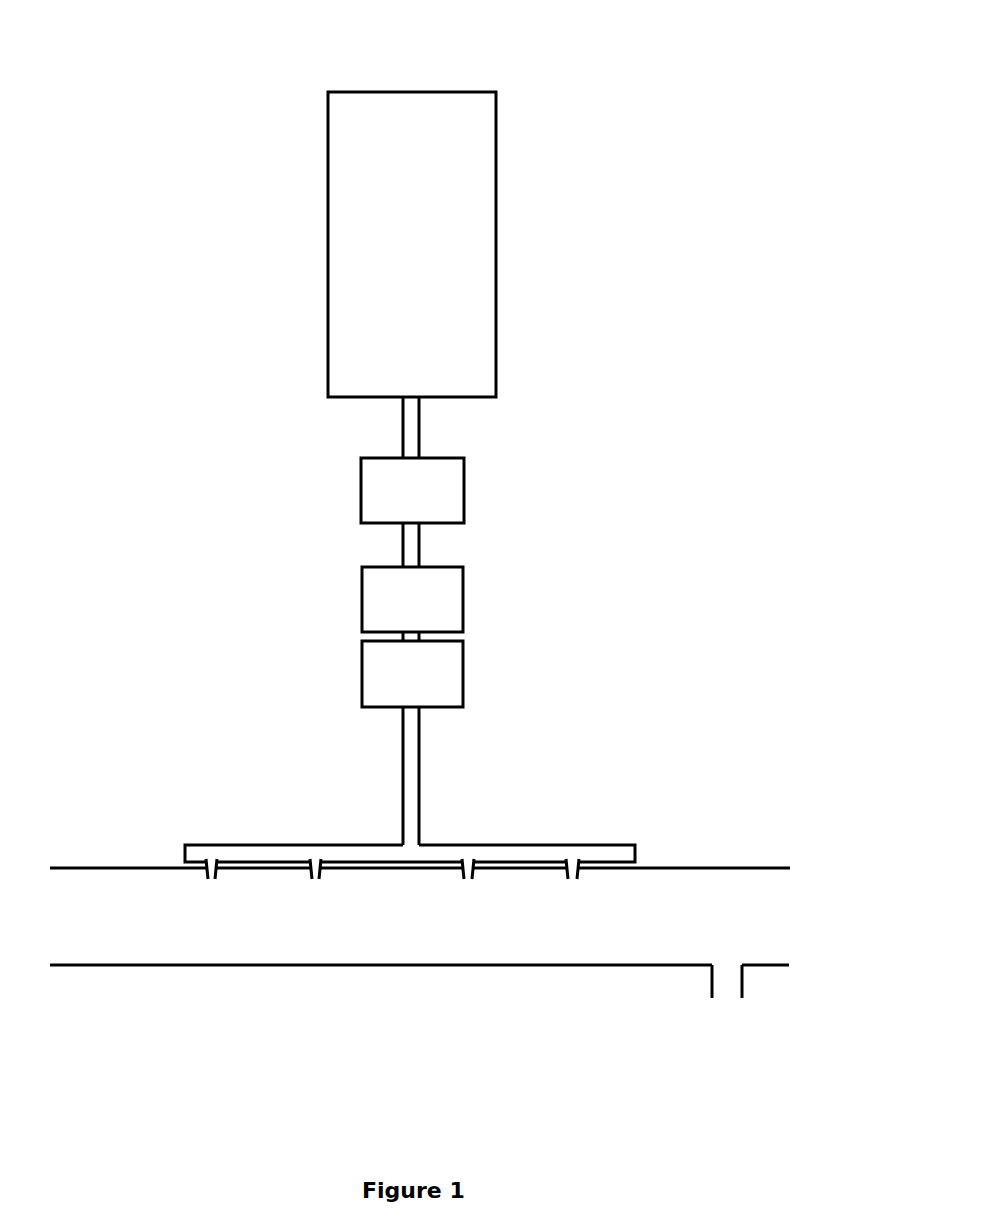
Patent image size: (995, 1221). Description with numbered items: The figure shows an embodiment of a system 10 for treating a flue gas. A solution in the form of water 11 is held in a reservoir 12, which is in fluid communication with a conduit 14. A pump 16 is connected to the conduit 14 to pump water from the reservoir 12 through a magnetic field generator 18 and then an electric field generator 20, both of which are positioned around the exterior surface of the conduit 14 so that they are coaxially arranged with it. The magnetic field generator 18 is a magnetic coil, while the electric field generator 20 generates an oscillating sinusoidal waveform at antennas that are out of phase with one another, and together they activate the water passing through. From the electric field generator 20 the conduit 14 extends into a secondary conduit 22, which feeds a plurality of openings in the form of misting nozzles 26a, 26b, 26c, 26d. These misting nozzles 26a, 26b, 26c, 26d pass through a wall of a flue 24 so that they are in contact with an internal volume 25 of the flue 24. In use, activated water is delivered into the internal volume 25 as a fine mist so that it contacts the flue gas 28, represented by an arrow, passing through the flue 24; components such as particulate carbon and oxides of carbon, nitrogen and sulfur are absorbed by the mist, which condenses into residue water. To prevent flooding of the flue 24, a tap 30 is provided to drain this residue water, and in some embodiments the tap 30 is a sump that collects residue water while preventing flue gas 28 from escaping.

The system 10 is at (247, 84).
The water 11 is at (395, 263).
The reservoir 12 is at (514, 244).
The conduit 14 is at (438, 429).
The pump 16 is at (425, 506).
The magnetic field generator 18 is at (425, 611).
The electric field generator 20 is at (425, 685).
The secondary conduit 22 is at (517, 830).
The flue 24 is at (420, 1029).
The internal volume 25 is at (142, 936).
The misting nozzle 26a is at (233, 896).
The misting nozzle 26b is at (337, 896).
The misting nozzle 26c is at (489, 896).
The misting nozzle 26d is at (593, 895).
The flue gas 28 is at (713, 917).
The tap 30 is at (756, 1020).